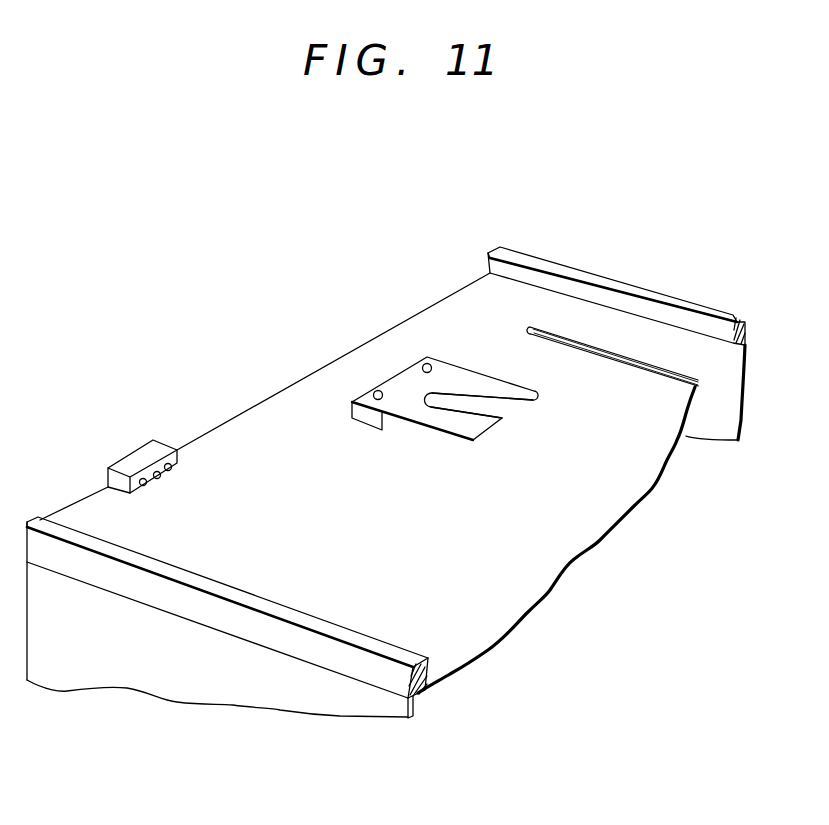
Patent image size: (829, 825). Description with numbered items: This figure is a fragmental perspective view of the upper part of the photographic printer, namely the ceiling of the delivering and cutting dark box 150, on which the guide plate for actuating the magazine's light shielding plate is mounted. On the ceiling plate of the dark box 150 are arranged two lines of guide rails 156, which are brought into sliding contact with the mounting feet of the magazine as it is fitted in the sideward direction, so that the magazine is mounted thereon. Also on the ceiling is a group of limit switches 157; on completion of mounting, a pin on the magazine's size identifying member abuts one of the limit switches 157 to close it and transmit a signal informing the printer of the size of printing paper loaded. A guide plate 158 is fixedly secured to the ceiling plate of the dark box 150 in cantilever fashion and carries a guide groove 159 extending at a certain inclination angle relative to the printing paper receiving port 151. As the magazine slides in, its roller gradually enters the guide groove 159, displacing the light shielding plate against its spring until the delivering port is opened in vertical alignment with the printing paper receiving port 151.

The delivering and cutting dark box 150 is at (318, 698).
The printing paper receiving port 151 is at (620, 357).
The guide rails 156 is at (338, 650).
The limit switches 157 is at (188, 408).
The guide plate 158 is at (387, 405).
The guide groove 159 is at (500, 407).